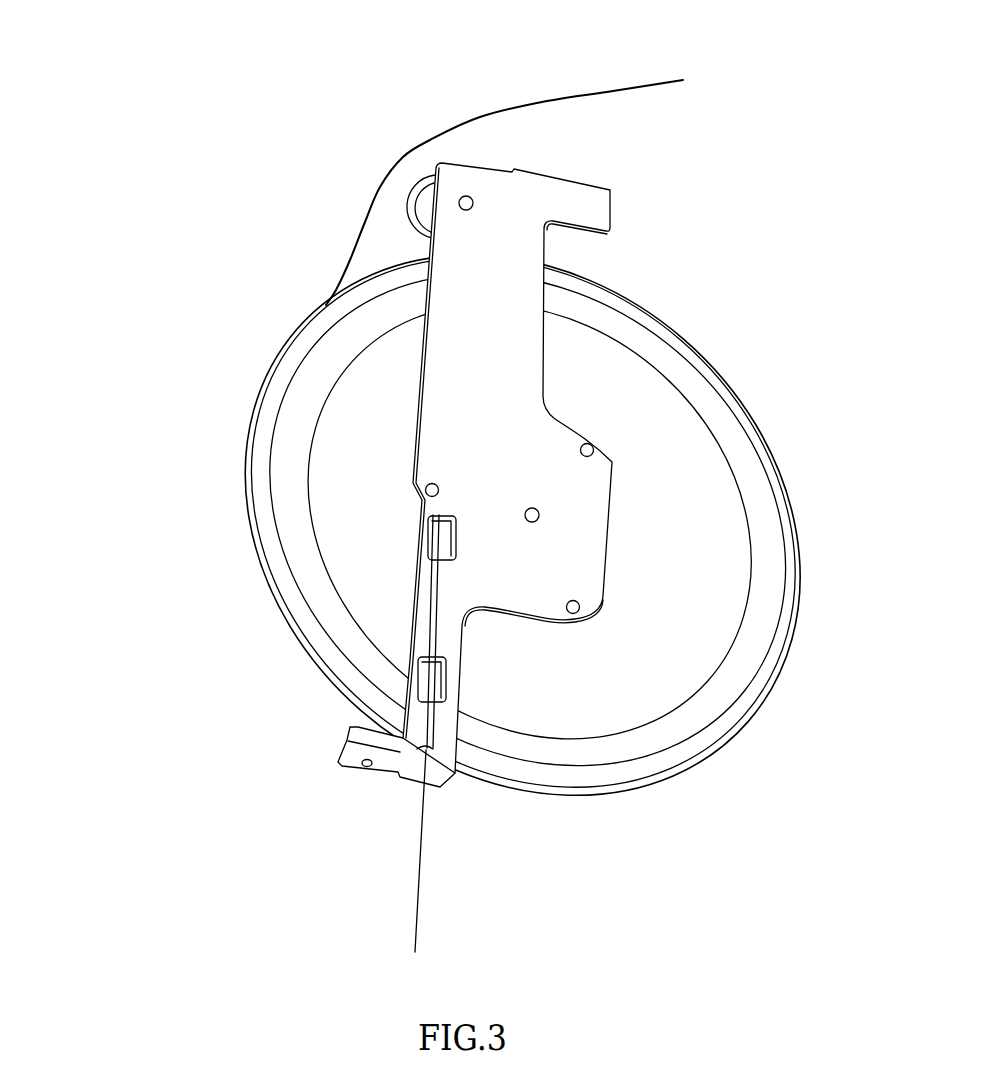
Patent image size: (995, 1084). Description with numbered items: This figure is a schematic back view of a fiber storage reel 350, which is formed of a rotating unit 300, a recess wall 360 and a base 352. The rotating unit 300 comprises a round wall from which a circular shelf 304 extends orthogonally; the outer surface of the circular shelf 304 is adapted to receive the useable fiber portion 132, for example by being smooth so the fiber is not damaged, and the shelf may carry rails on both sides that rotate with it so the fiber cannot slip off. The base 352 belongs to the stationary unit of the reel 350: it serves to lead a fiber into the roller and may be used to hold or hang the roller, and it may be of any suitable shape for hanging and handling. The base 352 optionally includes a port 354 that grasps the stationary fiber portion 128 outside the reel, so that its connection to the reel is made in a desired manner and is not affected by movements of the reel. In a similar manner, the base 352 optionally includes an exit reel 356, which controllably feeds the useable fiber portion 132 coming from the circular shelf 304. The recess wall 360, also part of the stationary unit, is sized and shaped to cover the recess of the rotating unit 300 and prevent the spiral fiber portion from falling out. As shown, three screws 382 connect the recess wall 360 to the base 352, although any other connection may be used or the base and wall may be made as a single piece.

The reel 350 is at (163, 134).
The useable fiber portion 132 is at (548, 96).
The base 352 is at (572, 193).
The exit reel 356 is at (412, 220).
The recess wall 360 is at (590, 360).
The screws 382 is at (427, 484).
The rotating unit 300 is at (753, 472).
The circular shelf 304 is at (230, 555).
The port 354 is at (463, 772).
The stationary fiber portion 128 is at (418, 888).